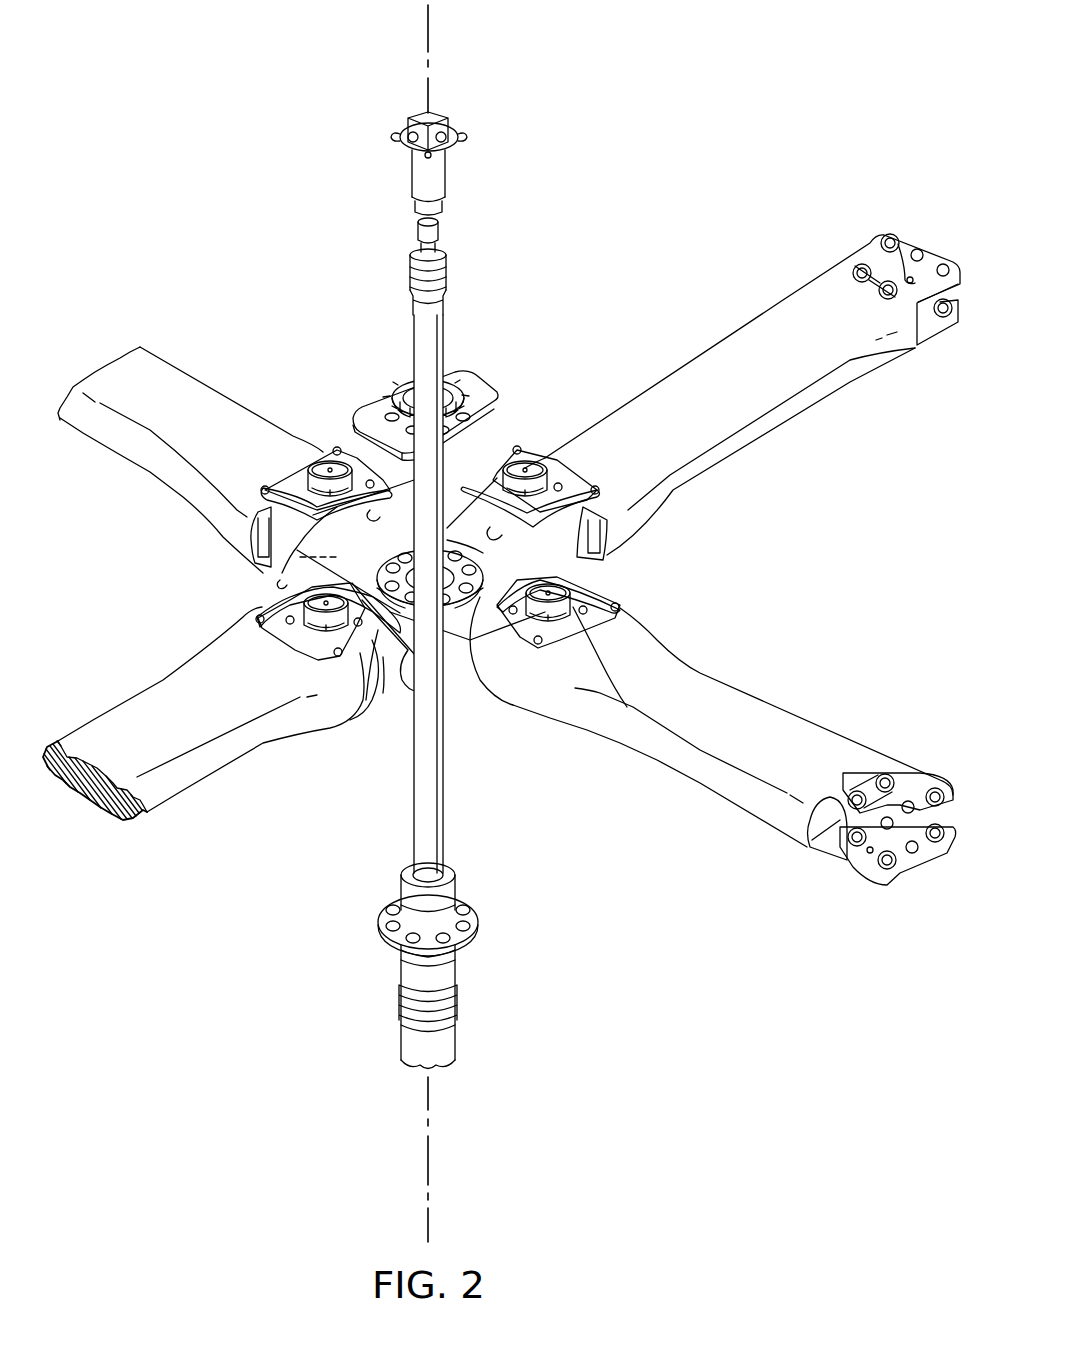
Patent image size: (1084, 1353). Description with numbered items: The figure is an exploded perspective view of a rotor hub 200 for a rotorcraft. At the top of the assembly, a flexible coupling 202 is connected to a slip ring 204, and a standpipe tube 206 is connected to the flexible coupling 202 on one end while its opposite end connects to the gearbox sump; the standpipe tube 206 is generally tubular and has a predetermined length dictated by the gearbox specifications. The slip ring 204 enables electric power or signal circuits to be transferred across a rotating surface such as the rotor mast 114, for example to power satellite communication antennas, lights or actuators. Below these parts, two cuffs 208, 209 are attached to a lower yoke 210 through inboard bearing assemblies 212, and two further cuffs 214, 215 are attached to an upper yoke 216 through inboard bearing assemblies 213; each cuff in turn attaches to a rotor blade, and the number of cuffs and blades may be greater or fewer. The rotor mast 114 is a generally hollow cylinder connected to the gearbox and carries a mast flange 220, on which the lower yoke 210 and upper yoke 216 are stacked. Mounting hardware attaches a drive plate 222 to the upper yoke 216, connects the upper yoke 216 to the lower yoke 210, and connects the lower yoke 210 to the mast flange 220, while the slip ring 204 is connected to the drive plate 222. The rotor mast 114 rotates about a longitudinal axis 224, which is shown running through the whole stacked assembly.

The rotor hub 200 is at (797, 101).
The flexible coupling 202 is at (450, 282).
The slip ring 204 is at (412, 173).
The standpipe tube 206 is at (435, 348).
The cuff 208 is at (777, 428).
The cuff 209 is at (212, 777).
The lower yoke 210 is at (600, 575).
The inboard bearing assembly 212 is at (540, 466).
The inboard bearing assembly 213 is at (323, 462).
The cuff 214 is at (787, 727).
The cuff 215 is at (187, 388).
The upper yoke 216 is at (283, 577).
The mast flange 220 is at (378, 917).
The drive plate 222 is at (490, 403).
The longitudinal axis 224 is at (428, 1157).
The rotor mast 114 is at (410, 973).